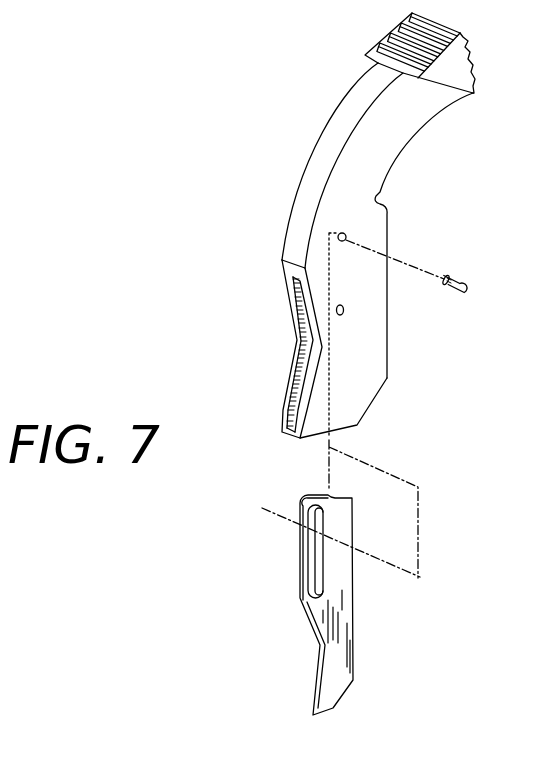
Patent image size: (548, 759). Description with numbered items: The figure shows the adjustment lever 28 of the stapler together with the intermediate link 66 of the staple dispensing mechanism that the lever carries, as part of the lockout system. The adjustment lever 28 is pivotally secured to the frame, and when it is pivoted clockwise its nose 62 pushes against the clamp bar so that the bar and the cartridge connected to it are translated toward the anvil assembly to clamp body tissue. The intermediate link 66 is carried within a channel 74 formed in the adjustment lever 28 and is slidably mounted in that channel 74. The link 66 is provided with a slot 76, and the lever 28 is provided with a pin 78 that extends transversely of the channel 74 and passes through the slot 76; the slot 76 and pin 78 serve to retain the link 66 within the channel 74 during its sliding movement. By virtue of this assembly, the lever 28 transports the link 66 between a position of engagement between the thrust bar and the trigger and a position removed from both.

The adjustment lever 28 is at (389, 203).
The nose 62 is at (368, 427).
The channel 74 is at (290, 433).
The pin 78 is at (458, 278).
The intermediate link 66 is at (353, 627).
The slot 76 is at (310, 574).